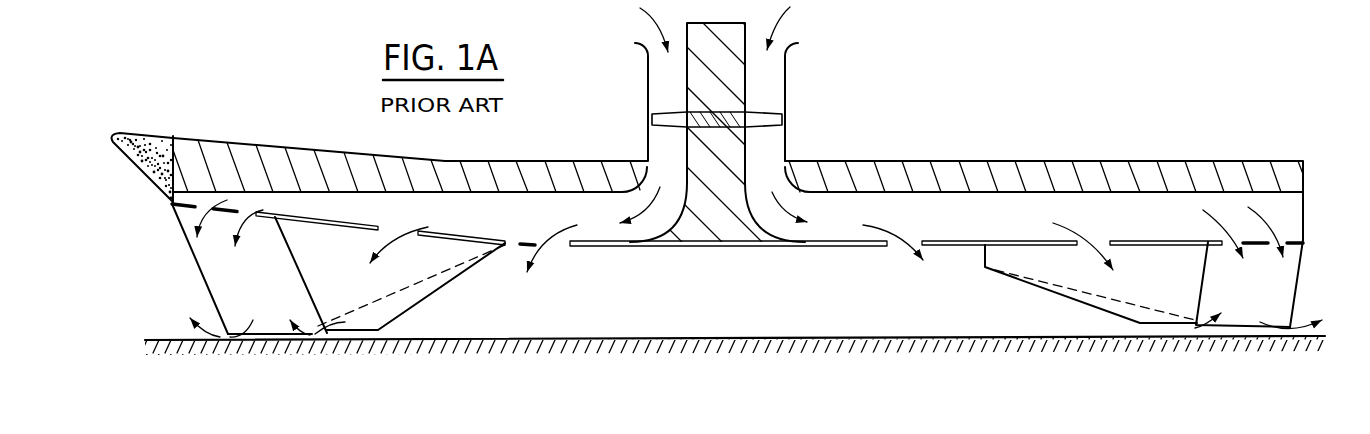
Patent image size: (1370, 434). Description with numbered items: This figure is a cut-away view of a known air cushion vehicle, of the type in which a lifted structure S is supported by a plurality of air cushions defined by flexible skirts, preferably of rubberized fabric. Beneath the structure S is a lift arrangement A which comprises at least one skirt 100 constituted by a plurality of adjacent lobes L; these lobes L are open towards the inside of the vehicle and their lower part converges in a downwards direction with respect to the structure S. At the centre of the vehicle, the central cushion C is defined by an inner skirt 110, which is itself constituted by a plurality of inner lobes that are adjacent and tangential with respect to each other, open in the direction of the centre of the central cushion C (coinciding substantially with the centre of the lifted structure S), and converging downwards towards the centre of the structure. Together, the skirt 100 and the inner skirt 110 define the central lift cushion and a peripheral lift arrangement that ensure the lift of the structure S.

The skirt 100 is at (182, 311).
The inner skirt 110 is at (305, 284).
The adjacent lobes L is at (194, 263).
The lifted structure S is at (925, 178).
The lift arrangement A is at (437, 319).
The central cushion C is at (733, 303).